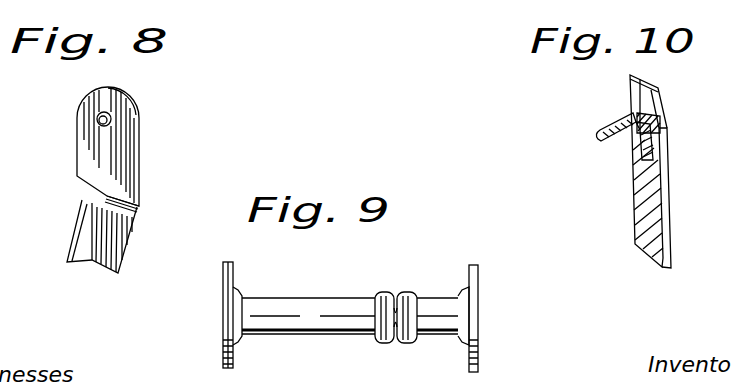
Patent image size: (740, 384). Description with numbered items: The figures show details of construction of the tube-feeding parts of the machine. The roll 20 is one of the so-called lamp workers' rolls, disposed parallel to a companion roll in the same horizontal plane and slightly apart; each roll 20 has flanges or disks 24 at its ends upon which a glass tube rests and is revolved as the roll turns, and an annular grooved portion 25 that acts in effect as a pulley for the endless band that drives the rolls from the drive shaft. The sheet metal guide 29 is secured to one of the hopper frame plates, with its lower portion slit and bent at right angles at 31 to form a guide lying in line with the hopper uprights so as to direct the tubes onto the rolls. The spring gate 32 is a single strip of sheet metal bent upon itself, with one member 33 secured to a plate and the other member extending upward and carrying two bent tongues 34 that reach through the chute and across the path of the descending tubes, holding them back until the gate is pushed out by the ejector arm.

In FIG. 9, the rolls 20 is at (313, 305).
In FIG. 9, the flanges or disks 24 is at (233, 263).
In FIG. 9, the annular grooved portion 25 is at (395, 293).
In FIG. 8, the sheet metal guides 29 is at (128, 158).
In FIG. 8, the slit and bent portion 31 is at (72, 240).
In FIG. 10, the spring gate 32 is at (661, 127).
In FIG. 10, the member 33 is at (642, 208).
In FIG. 10, the bent tongues 34 is at (645, 154).